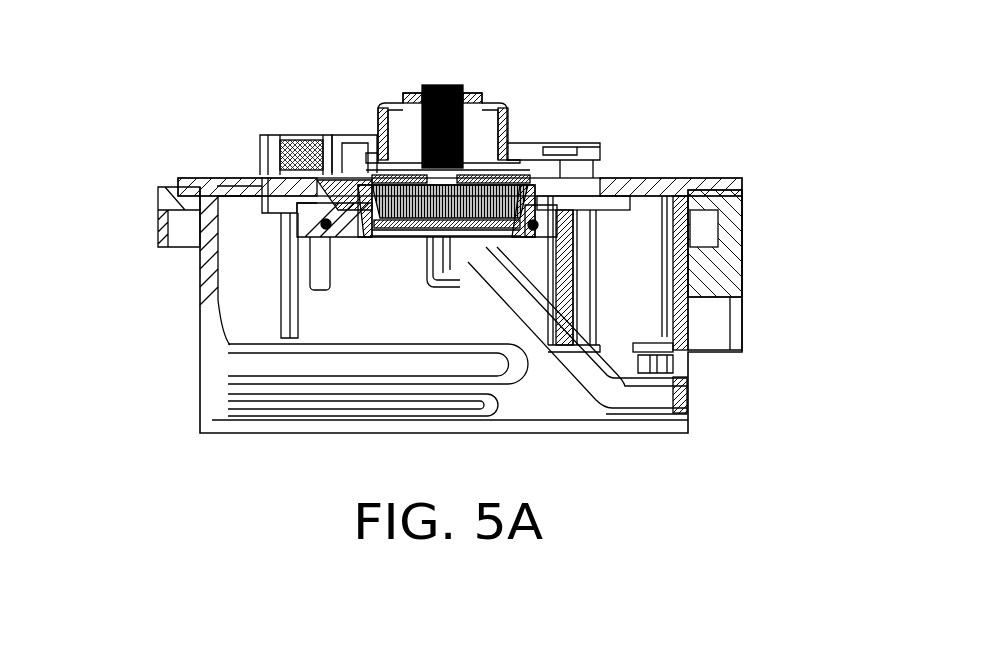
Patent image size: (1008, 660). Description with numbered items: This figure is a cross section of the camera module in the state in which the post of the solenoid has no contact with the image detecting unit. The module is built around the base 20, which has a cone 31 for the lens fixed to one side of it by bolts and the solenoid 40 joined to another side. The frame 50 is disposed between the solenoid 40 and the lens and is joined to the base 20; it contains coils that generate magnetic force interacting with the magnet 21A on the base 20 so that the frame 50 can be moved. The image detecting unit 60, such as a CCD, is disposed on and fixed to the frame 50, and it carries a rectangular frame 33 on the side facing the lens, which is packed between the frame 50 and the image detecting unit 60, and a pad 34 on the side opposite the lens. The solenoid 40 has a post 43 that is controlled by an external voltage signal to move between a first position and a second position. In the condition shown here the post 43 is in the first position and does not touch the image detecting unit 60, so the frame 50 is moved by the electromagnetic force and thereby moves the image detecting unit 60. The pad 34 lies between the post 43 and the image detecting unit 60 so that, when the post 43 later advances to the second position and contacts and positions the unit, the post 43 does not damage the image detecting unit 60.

The base 20 is at (660, 184).
The magnet 21A is at (299, 148).
The cone 31 is at (729, 217).
The rectangular frame 33 is at (513, 188).
The pad 34 is at (398, 177).
The solenoid 40 is at (397, 103).
The post 43 is at (445, 88).
The frame 50 is at (262, 176).
The image detecting unit 60 is at (460, 207).